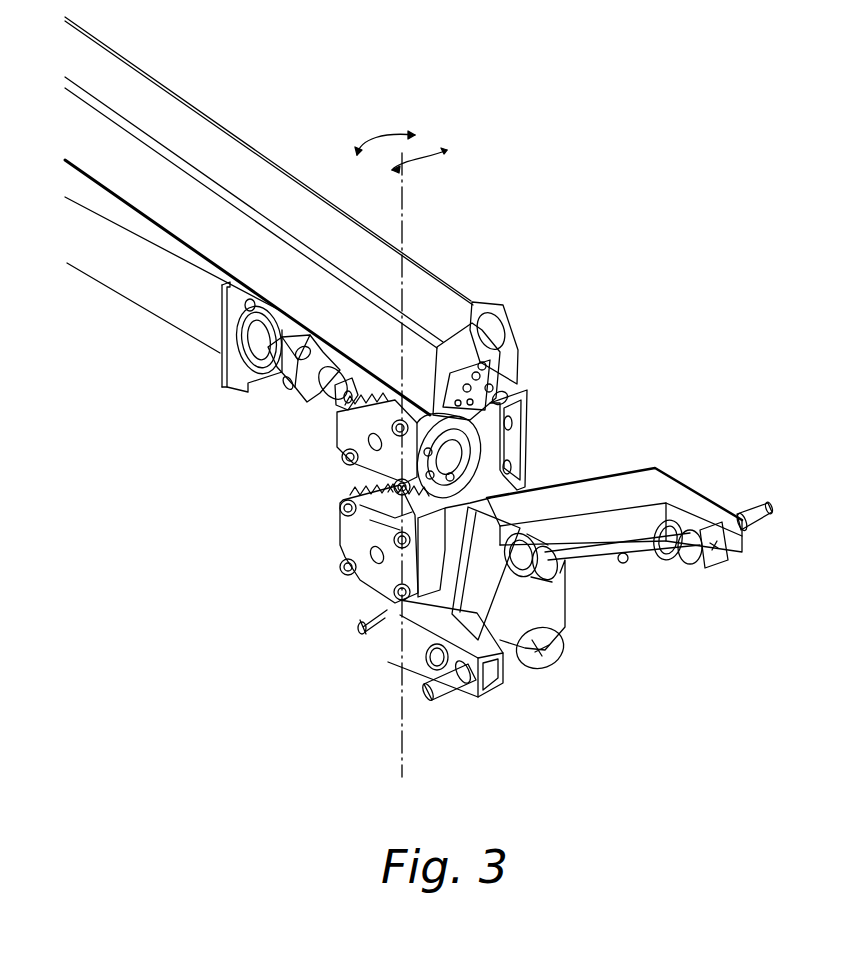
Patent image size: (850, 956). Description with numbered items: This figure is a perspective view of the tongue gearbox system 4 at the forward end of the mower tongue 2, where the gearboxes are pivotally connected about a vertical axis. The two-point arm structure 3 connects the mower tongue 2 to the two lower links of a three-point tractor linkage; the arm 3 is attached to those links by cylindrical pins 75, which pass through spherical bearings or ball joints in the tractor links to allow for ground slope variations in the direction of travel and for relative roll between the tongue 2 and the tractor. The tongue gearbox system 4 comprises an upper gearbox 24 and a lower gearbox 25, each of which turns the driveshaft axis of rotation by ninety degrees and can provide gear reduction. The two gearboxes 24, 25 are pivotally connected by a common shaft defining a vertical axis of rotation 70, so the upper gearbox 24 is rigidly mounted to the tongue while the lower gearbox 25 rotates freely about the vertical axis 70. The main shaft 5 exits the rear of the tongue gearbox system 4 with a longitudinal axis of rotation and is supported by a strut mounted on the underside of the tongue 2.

The mower tongue 2 is at (232, 157).
The two-point arm structure 3 is at (603, 492).
The tongue gearbox system 4 is at (328, 603).
The main shaft 5 is at (163, 298).
The upper gearbox 24 is at (360, 420).
The lower gearbox 25 is at (367, 537).
The vertical axis of rotation 70 is at (403, 222).
The cylindrical pins 75 is at (750, 502).